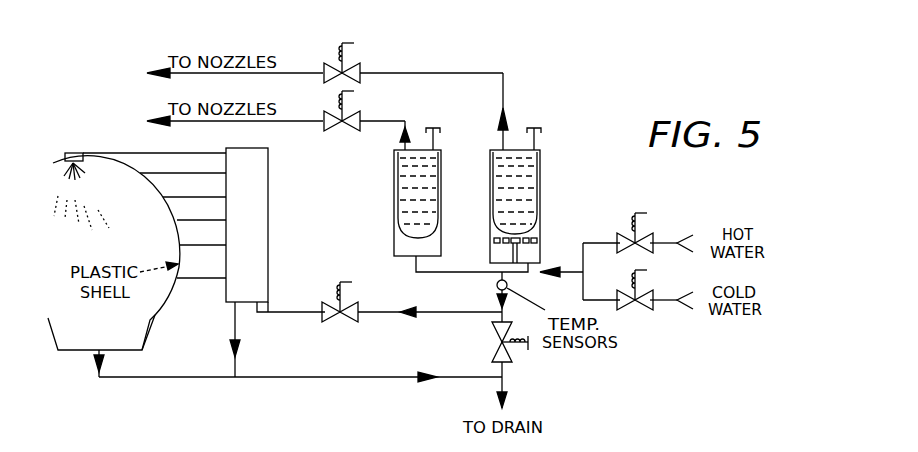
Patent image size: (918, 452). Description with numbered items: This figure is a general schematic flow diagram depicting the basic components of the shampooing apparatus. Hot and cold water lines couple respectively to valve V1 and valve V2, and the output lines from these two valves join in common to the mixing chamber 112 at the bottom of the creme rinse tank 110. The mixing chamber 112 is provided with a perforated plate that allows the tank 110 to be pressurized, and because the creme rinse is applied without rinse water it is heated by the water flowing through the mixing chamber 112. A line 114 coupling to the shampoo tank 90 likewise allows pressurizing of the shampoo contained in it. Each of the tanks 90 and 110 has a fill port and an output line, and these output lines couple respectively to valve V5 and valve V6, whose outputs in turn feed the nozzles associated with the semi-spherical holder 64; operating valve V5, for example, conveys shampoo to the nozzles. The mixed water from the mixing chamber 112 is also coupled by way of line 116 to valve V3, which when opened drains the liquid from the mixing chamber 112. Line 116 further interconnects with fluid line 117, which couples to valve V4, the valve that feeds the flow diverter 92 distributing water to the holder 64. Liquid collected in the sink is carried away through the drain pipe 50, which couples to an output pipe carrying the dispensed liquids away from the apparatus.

The drain pipe 50 is at (160, 378).
The semi-spherical holder 64 is at (118, 152).
The shampoo tank 90 is at (403, 243).
The flow diverter 92 is at (268, 169).
The tank 110 is at (556, 147).
The mixing chamber 112 is at (541, 230).
The line 114 is at (457, 273).
The line 116 is at (502, 312).
The fluid line 117 is at (381, 316).
The valve V1 is at (650, 240).
The valve V2 is at (650, 297).
The valve V3 is at (510, 357).
The valve V4 is at (331, 323).
The valve V5 is at (360, 115).
The valve V6 is at (360, 67).